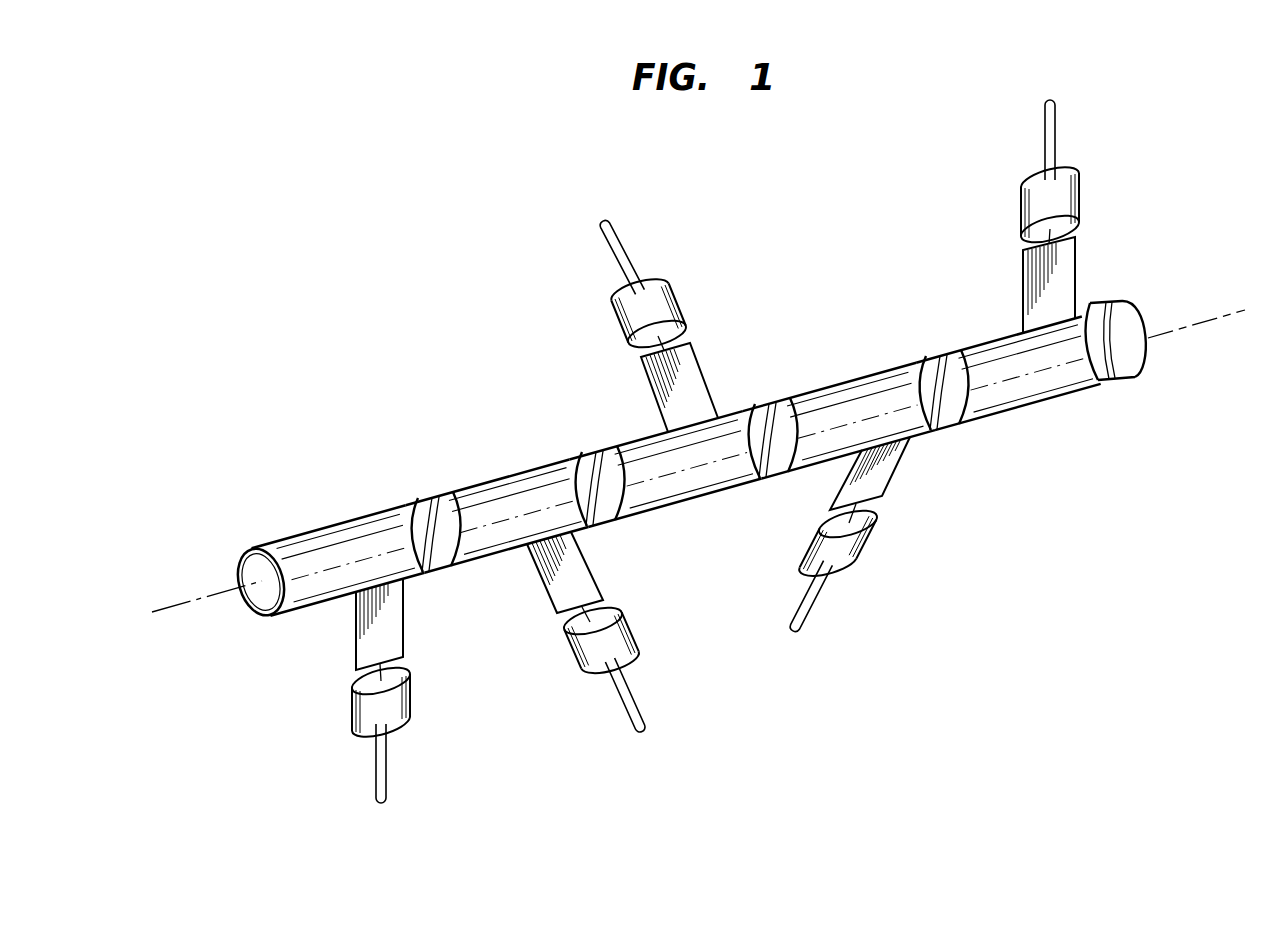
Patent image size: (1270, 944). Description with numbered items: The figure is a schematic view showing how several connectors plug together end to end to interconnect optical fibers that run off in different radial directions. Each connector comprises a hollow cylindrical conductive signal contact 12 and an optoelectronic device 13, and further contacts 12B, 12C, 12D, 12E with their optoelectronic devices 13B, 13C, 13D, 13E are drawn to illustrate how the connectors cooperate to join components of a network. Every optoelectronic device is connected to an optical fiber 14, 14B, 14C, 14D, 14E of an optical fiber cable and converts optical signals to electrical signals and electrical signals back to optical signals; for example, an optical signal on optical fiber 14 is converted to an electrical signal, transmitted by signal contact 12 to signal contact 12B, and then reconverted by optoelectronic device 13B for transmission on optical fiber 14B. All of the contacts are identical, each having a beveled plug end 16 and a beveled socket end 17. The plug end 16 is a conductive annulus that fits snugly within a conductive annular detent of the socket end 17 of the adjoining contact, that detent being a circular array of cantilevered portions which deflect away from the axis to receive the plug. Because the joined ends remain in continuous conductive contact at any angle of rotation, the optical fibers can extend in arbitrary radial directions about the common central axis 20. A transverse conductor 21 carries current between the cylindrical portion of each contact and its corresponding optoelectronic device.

The signal contact 12 is at (340, 522).
The signal contact 12B is at (495, 557).
The signal contact 12C is at (694, 498).
The signal contact 12D is at (832, 384).
The signal contact 12E is at (1052, 399).
The optoelectronic device 13 is at (412, 697).
The optoelectronic device 13B is at (641, 640).
The optoelectronic device 13C is at (683, 301).
The optoelectronic device 13D is at (872, 548).
The optoelectronic device 13E is at (1083, 201).
The optical fiber 14 is at (387, 773).
The optical fiber 14B is at (646, 710).
The optical fiber 14C is at (622, 240).
The optical fiber 14D is at (822, 608).
The optical fiber 14E is at (1057, 124).
The plug end 16 is at (257, 549).
The socket end 17 is at (409, 510).
The central axis 20 is at (204, 605).
The transverse conductor 21 is at (356, 630).